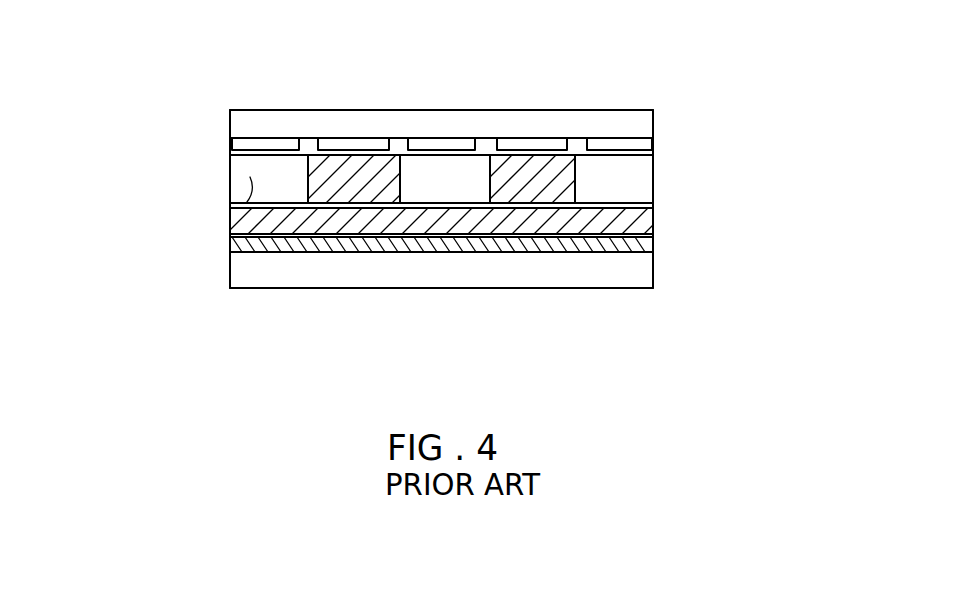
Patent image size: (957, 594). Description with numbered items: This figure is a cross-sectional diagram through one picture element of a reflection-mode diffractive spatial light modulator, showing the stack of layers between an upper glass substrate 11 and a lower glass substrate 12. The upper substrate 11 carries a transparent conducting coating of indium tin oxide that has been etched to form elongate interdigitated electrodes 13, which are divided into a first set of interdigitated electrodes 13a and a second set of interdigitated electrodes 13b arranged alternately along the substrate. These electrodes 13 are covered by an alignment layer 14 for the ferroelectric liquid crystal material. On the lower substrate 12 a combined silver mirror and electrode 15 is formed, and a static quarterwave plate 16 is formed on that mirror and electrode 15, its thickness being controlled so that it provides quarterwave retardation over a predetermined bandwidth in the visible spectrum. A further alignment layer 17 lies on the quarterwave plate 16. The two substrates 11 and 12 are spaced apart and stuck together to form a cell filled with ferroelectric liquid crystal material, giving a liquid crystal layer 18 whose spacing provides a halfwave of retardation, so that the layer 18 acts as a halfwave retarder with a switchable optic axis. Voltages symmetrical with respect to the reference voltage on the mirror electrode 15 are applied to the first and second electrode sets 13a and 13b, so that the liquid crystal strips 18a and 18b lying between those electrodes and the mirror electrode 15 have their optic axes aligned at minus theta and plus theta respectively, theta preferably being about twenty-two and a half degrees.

The upper glass substrate 11 is at (655, 112).
The lower glass substrate 12 is at (648, 268).
The interdigitated electrodes 13 is at (353, 140).
The first set of interdigitated electrodes 13a is at (521, 138).
The second set of interdigitated electrodes 13b is at (466, 138).
The alignment layer 14 is at (655, 137).
The combined mirror and electrode 15 is at (620, 243).
The static quarterwave plate 16 is at (512, 220).
The further alignment layer 17 is at (364, 210).
The ferroelectric liquid crystal layer 18 is at (230, 214).
The ferroelectric liquid crystal material strip 18a is at (558, 167).
The ferroelectric liquid crystal material strip 18b is at (433, 168).